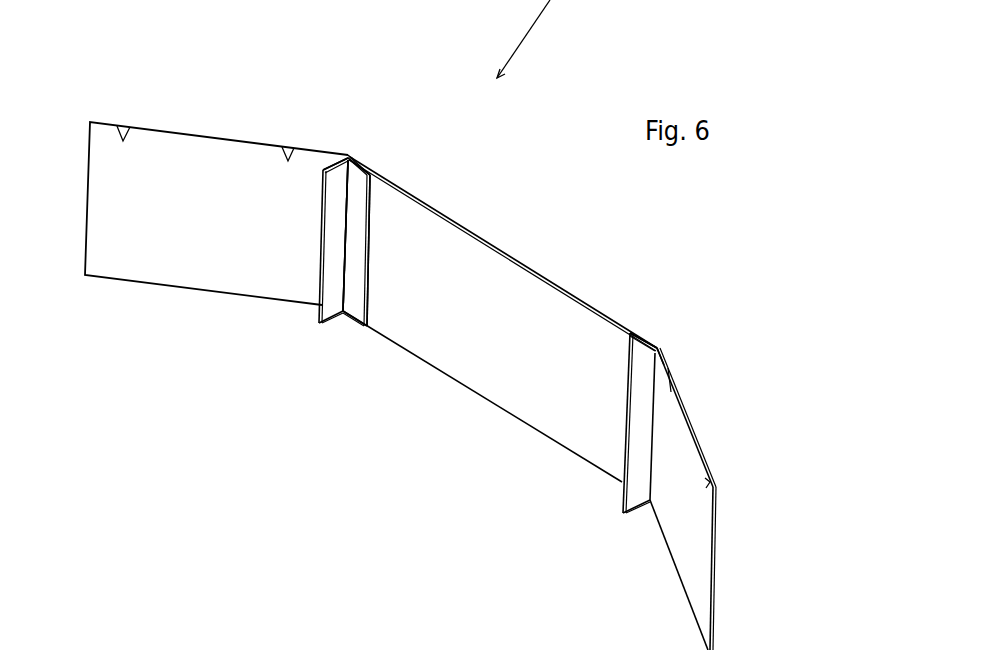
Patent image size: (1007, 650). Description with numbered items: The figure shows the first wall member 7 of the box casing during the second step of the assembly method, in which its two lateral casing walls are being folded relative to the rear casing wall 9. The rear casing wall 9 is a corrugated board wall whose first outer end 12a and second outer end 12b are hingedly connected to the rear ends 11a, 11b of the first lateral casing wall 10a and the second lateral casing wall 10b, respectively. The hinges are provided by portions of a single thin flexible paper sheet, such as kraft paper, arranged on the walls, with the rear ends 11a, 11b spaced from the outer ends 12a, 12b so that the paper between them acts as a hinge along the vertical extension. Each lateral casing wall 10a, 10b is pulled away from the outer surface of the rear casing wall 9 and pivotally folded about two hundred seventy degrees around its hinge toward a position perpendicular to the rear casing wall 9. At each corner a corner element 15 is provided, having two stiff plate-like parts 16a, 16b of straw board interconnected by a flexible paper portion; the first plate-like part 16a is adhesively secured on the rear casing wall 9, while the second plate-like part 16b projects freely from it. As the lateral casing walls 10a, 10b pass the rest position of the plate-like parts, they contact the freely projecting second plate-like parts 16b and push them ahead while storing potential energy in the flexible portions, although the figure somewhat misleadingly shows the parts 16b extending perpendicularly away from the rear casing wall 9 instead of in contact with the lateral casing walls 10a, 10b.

The first wall member 7 is at (515, 649).
The rear casing wall 9 is at (463, 343).
The first lateral casing wall 10a is at (687, 520).
The second lateral casing wall 10b is at (120, 262).
The rear end of the first lateral casing wall 11a is at (657, 348).
The rear end of the second lateral casing wall 11b is at (350, 157).
The first outer end of the rear casing wall 12a is at (657, 348).
The second outer end of the rear casing wall 12b is at (350, 157).
The corner element 15 is at (370, 218).
The first plate-like part 16a is at (355, 302).
The second plate-like part 16b is at (332, 295).